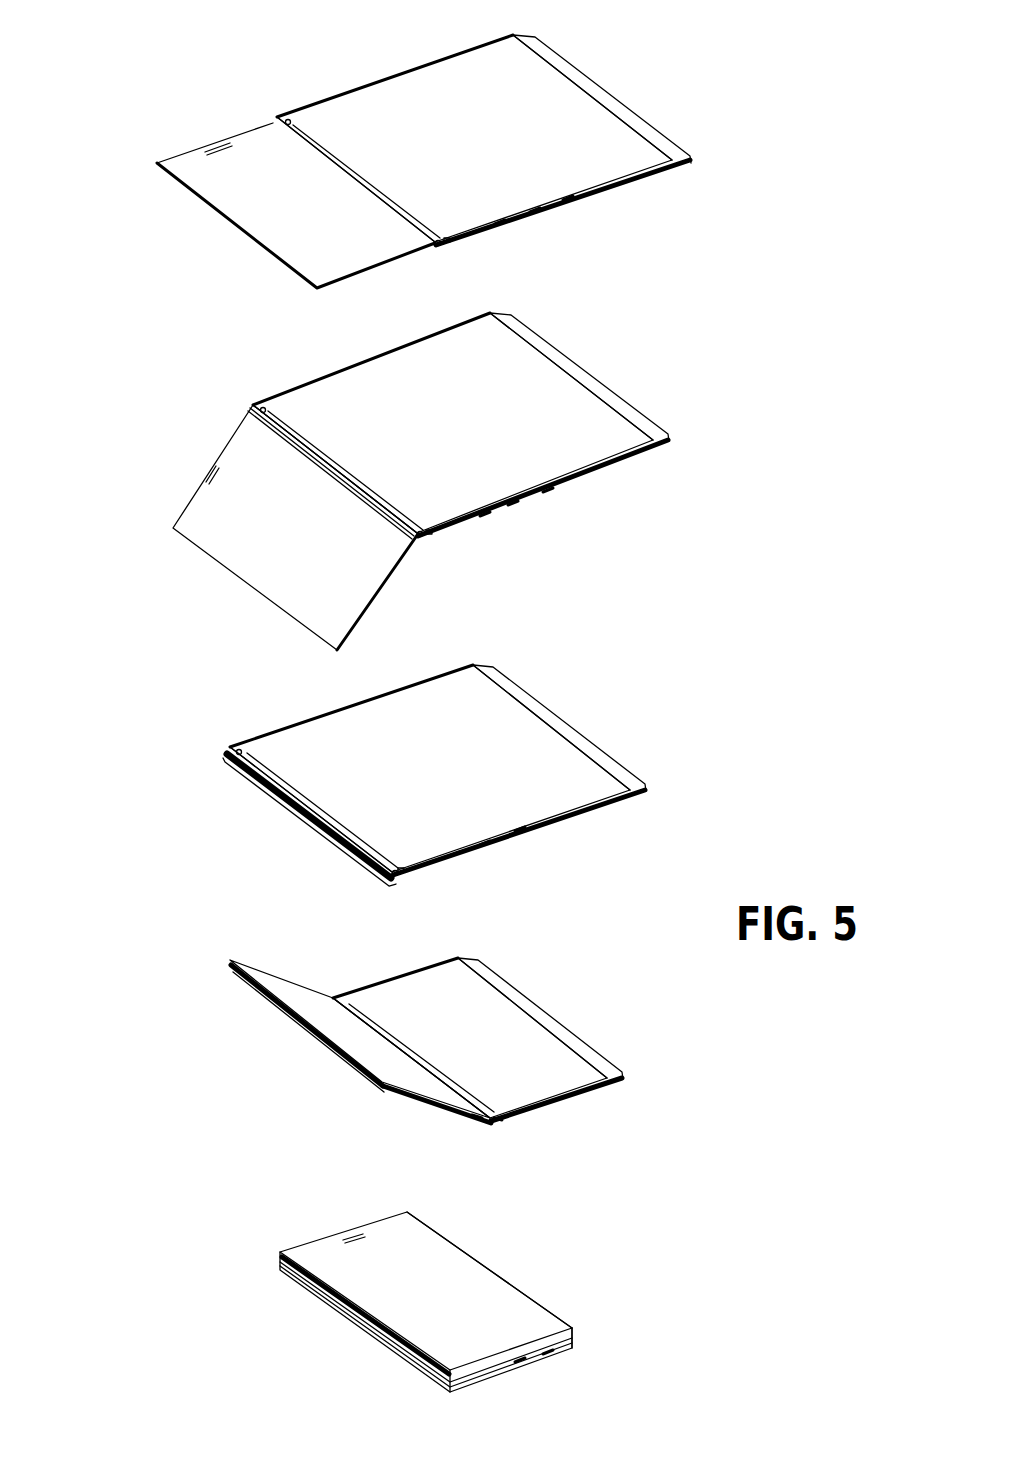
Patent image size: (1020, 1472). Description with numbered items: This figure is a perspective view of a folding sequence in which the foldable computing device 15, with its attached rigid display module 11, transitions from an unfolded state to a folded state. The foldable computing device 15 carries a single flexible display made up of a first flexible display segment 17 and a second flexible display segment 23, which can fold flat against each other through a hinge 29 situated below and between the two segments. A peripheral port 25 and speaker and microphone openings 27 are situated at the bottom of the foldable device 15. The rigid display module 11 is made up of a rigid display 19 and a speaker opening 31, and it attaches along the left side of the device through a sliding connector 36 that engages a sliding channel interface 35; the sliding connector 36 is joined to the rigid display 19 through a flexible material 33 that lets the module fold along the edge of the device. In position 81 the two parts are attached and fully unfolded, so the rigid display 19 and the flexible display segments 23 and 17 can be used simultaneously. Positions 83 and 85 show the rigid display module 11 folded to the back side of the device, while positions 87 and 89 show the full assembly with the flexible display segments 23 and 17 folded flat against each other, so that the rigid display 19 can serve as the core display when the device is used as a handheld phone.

The rigid display module 11 is at (147, 137).
The foldable computing device 15 is at (645, 117).
The first flexible display segment 17 is at (345, 95).
The rigid display 19 is at (257, 133).
The second flexible display segment 23 is at (460, 58).
The peripheral port 25 is at (500, 222).
The speaker and microphone openings 27 is at (535, 210).
The hinge 29 is at (571, 200).
The speaker opening 31 is at (212, 140).
The flexible material 33 is at (437, 247).
The sliding channel interface 35 is at (450, 243).
The sliding connector 36 is at (282, 119).
The position 81 is at (590, 52).
The position 83 is at (588, 330).
The position 85 is at (583, 688).
The position 87 is at (583, 980).
The position 89 is at (585, 1222).